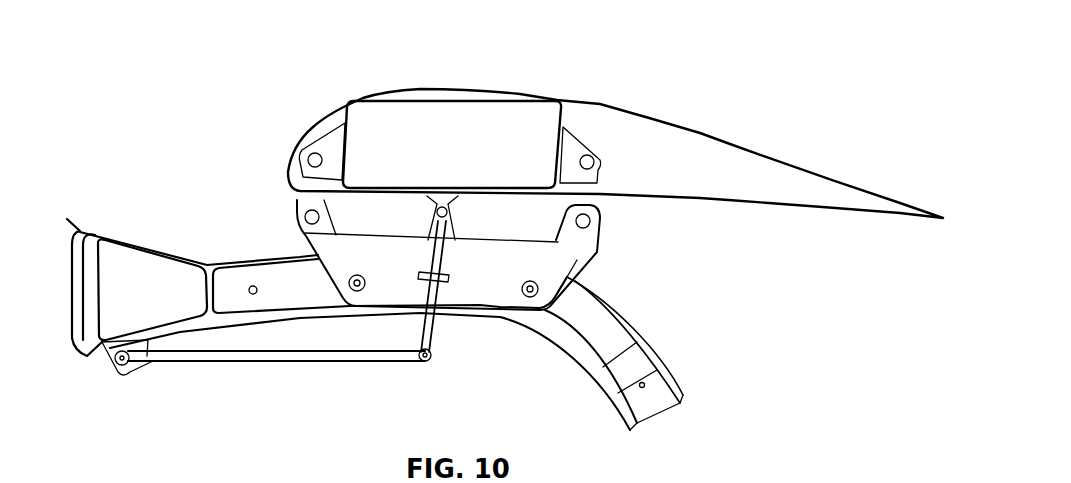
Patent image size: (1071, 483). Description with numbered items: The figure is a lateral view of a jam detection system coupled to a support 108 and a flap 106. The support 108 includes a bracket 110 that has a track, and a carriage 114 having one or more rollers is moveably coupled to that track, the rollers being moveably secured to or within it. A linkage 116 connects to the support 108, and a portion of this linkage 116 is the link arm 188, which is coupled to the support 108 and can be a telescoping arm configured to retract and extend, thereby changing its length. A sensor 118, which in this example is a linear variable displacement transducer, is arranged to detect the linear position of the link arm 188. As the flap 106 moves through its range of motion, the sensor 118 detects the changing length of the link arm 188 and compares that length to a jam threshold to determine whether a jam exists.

The flap 106 is at (527, 95).
The support 108 is at (117, 252).
The bracket 110 is at (82, 314).
The carriage 114 is at (572, 262).
The linkage 116 is at (232, 363).
The sensor 118 is at (130, 376).
The link arm 188 is at (293, 363).